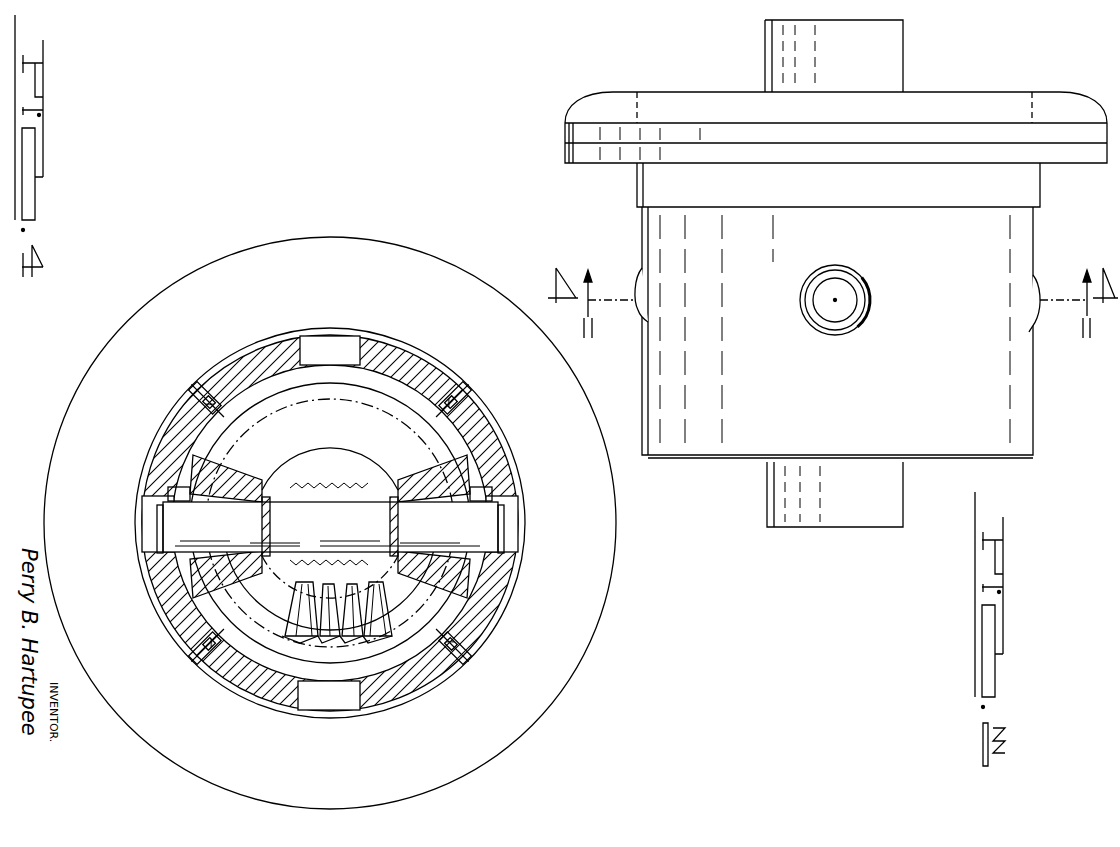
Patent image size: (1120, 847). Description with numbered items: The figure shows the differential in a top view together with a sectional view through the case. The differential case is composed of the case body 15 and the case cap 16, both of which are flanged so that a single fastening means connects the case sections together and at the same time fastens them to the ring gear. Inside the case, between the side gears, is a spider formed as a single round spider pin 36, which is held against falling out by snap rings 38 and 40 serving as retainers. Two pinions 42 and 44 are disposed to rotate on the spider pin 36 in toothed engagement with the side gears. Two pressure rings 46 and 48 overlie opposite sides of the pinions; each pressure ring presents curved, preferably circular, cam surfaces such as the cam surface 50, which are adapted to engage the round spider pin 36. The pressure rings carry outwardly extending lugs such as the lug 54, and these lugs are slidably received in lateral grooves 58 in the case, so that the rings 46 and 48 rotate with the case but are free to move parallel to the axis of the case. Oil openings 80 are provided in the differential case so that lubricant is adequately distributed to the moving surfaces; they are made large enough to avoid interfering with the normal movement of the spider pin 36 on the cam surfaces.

In FIG. 4, the case body 15 is at (497, 620).
In FIG. 3, the case body 15 is at (1035, 440).
In FIG. 4, the case cap 16 is at (600, 613).
In FIG. 3, the case cap 16 is at (700, 92).
In FIG. 4, the spider pin 36 is at (330, 524).
In FIG. 3, the spider pin 36 is at (826, 290).
In FIG. 4, the snap ring 38 is at (380, 478).
In FIG. 4, the snap ring 40 is at (270, 478).
In FIG. 4, the pinion 42 is at (430, 560).
In FIG. 4, the pinion 44 is at (200, 470).
In FIG. 3, the pressure ring 46 is at (842, 266).
In FIG. 3, the pressure ring 48 is at (836, 334).
In FIG. 4, the cam surface 50 is at (168, 498).
In FIG. 4, the lug 54 is at (205, 398).
In FIG. 4, the lateral groove 58 is at (215, 400).
In FIG. 4, the oil opening 80 is at (343, 337).
In FIG. 3, the oil opening 80 is at (640, 312).